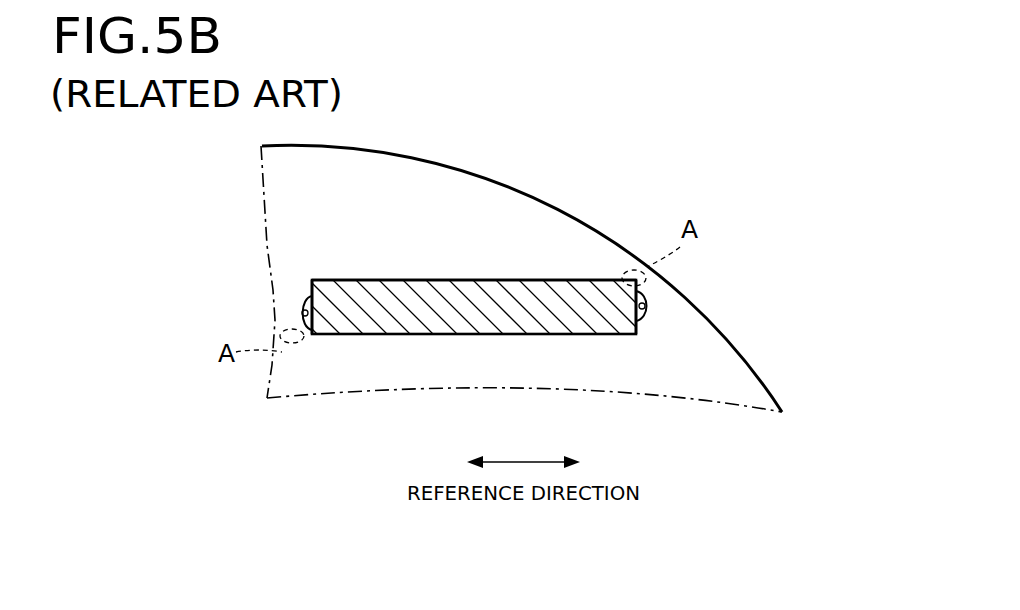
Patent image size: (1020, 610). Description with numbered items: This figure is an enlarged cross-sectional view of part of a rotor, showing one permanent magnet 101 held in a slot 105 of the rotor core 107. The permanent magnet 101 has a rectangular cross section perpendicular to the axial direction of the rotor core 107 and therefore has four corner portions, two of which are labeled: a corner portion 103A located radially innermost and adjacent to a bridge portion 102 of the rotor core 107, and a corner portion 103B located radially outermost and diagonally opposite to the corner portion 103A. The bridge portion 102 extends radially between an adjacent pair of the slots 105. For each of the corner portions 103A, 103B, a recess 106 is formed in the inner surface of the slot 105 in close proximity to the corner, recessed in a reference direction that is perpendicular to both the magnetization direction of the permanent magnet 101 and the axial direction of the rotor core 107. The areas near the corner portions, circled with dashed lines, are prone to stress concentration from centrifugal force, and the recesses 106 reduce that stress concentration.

The permanent magnet 101 is at (547, 334).
The bridge portion 102 is at (292, 318).
The corner portion 103A is at (312, 335).
The corner portion 103B is at (648, 290).
The slot 105 is at (585, 283).
The recess 106 is at (303, 298).
The rotor core 107 is at (734, 370).